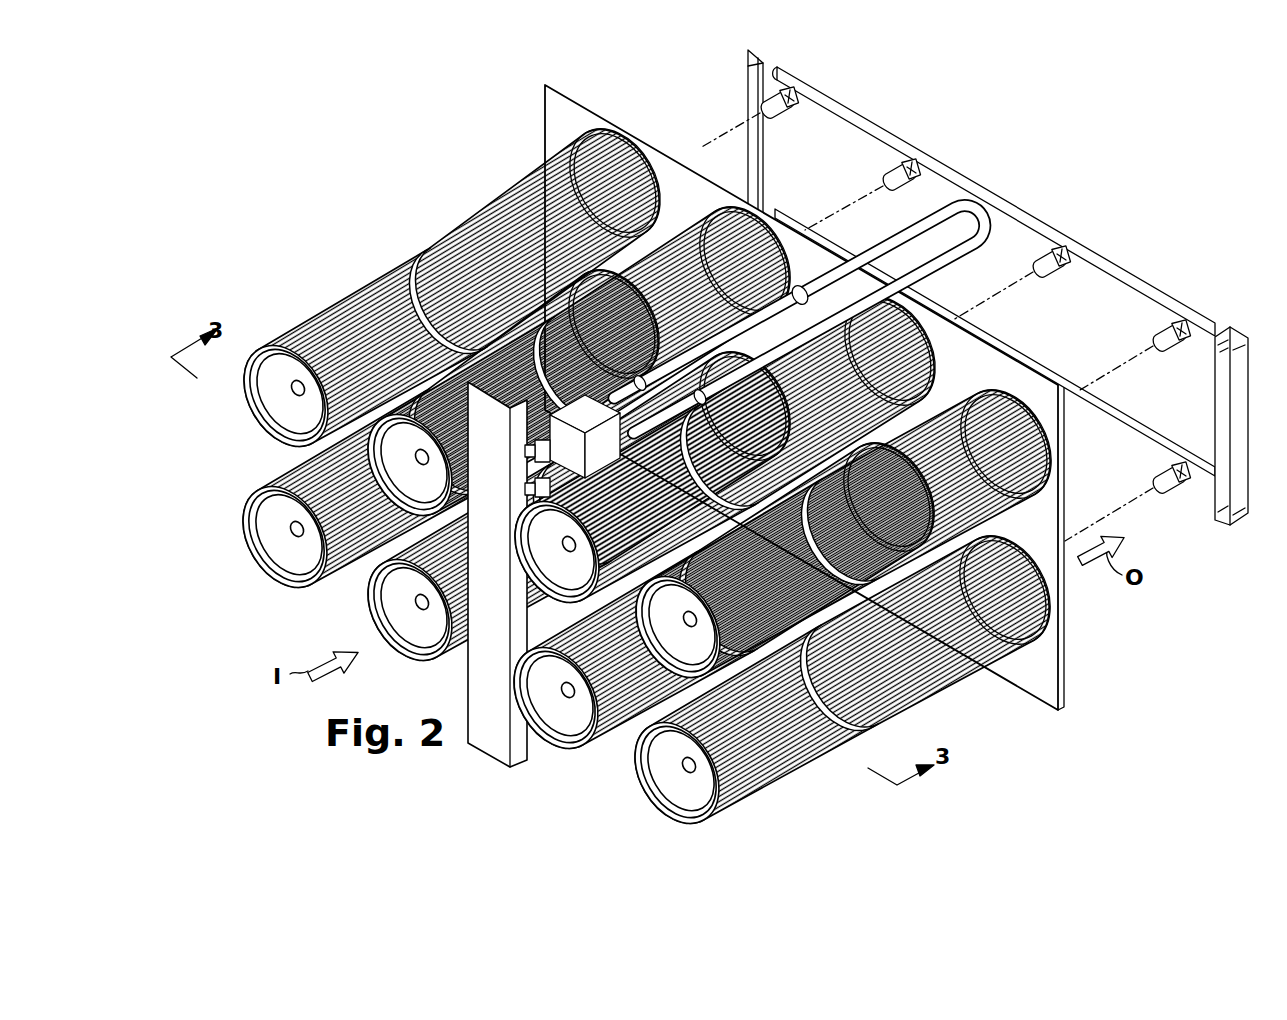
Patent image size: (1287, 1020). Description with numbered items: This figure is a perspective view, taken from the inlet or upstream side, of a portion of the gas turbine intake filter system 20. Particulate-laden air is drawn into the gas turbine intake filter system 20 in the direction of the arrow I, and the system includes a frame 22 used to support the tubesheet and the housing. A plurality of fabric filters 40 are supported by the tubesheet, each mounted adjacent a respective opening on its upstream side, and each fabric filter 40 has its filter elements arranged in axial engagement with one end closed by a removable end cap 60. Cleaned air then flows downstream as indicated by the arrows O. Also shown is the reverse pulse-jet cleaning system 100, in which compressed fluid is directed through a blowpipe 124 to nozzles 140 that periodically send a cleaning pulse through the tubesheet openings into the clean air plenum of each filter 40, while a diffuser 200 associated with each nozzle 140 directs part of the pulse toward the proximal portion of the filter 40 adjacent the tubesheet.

The gas turbine intake filter system 20 is at (472, 110).
The frame 22 is at (522, 760).
The fabric filter 40 is at (632, 475).
The removable end cap 60 is at (268, 387).
The reverse pulse-jet cleaning system 100 is at (998, 178).
The blowpipe 124 is at (862, 130).
The nozzle 140 is at (773, 120).
The diffuser 200 is at (762, 110).